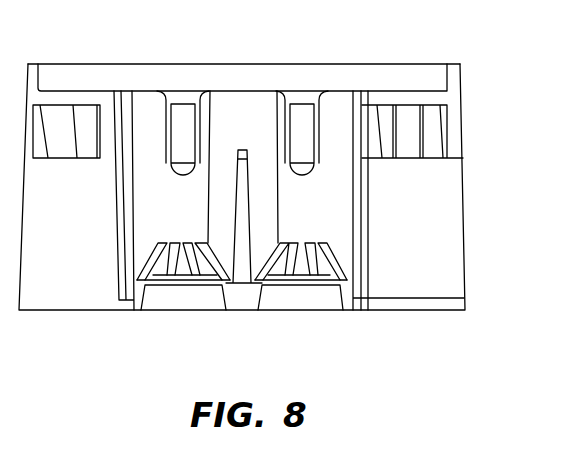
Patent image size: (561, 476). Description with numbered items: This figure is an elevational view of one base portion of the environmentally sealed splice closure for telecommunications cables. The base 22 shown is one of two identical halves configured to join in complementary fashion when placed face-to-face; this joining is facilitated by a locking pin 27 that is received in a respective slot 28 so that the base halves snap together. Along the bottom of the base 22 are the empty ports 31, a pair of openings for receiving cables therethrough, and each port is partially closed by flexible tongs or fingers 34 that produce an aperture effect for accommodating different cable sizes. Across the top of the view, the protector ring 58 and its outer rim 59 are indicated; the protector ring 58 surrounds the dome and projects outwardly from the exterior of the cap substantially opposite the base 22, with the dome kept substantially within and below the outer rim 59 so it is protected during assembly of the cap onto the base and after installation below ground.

The base 22 is at (68, 314).
The locking pin 27 is at (62, 113).
The slot 28 is at (408, 107).
The port 31 is at (186, 300).
The flexible fingers 34 is at (194, 244).
The protector ring 58 is at (347, 78).
The outer rim 59 is at (277, 72).